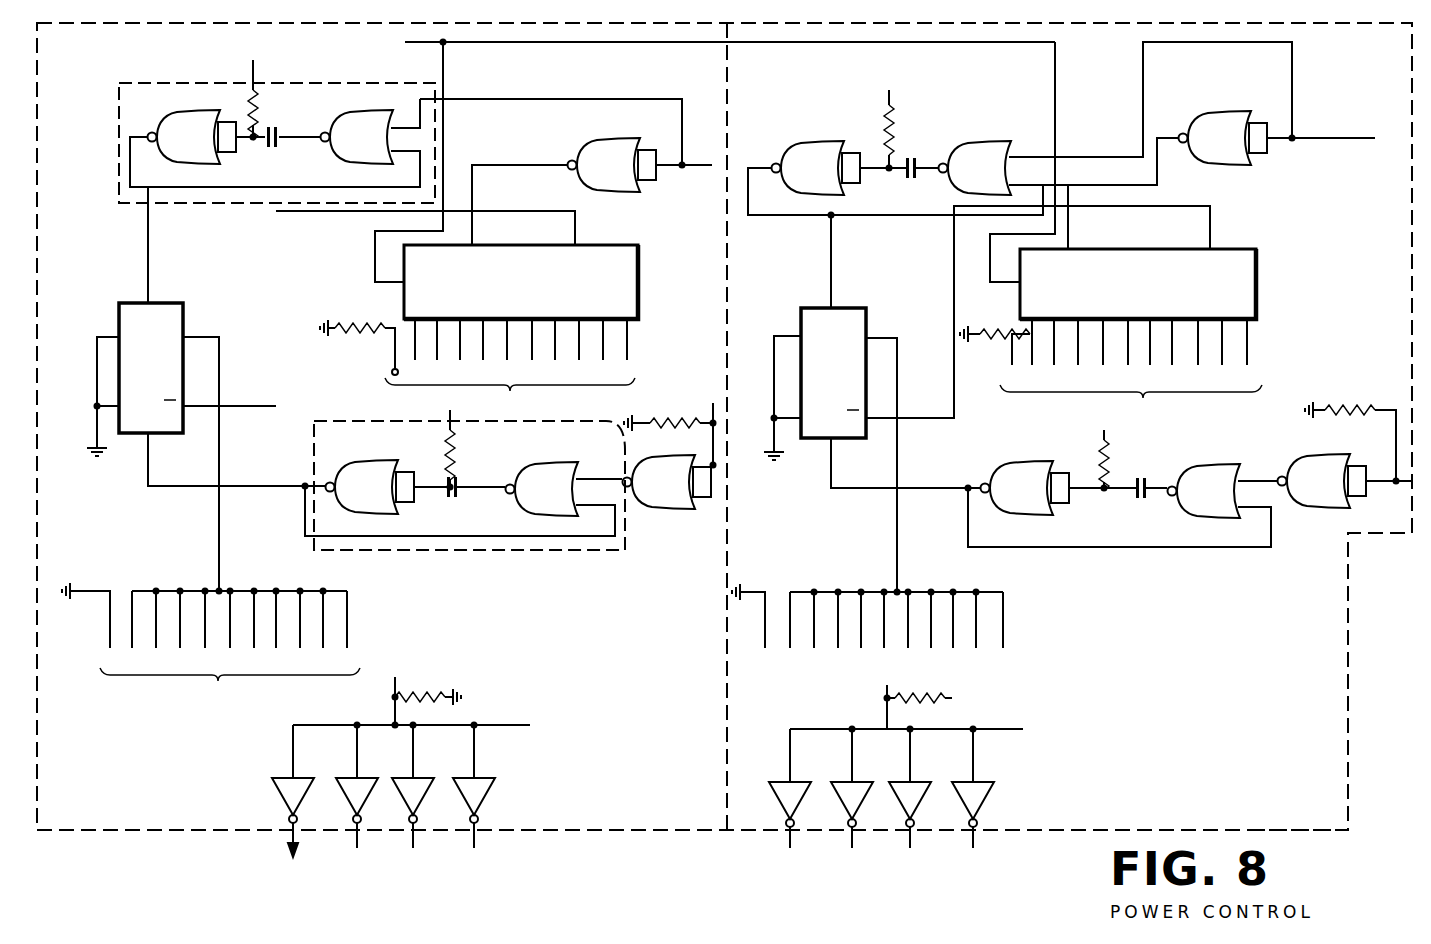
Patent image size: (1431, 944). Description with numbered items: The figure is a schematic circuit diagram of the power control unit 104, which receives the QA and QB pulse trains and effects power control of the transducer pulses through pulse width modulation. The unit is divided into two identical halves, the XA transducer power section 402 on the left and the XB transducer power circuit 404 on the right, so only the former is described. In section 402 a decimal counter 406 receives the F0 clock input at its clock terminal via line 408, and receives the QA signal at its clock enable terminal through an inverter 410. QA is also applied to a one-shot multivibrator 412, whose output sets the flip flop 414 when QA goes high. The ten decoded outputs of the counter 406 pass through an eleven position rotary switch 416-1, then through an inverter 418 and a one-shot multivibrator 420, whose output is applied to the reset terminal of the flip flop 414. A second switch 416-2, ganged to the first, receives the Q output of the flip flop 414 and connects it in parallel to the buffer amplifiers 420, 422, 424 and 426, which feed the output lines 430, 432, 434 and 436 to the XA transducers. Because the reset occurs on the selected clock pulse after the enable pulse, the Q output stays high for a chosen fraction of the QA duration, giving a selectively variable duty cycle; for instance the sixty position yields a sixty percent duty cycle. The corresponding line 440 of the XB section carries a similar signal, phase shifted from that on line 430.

The power control unit 104 is at (1070, 850).
The XA transducer power section 402 is at (661, 742).
The XB transducer power circuit 404 is at (1239, 782).
The counter 406 is at (541, 309).
The line 408 is at (375, 263).
The inverter 410 is at (633, 177).
The one-shot multivibrator 412 is at (130, 203).
The flip flop 414 is at (172, 384).
The rotary switch 416-1 is at (518, 365).
The switch 416-2 is at (296, 656).
The inverter 418 is at (670, 467).
The one-shot multivibrator 420 is at (491, 534).
The buffer amplifier 422 is at (343, 774).
The buffer amplifier 424 is at (399, 774).
The buffer amplifier 426 is at (460, 774).
The line 430 is at (282, 863).
The line 432 is at (330, 844).
The line 434 is at (388, 844).
The line 436 is at (449, 844).
The line 440 is at (774, 824).